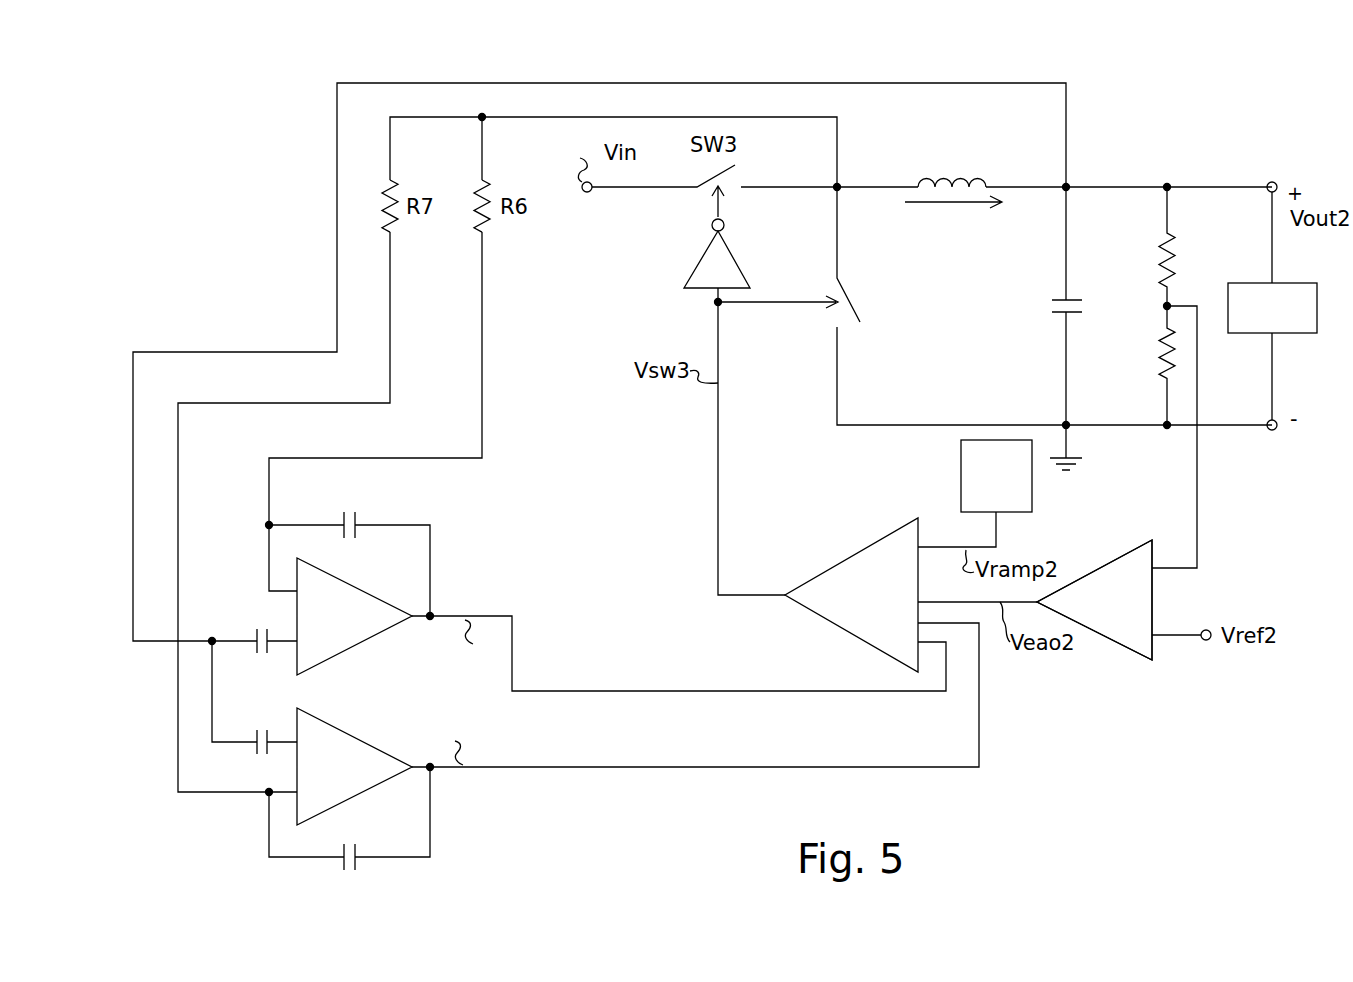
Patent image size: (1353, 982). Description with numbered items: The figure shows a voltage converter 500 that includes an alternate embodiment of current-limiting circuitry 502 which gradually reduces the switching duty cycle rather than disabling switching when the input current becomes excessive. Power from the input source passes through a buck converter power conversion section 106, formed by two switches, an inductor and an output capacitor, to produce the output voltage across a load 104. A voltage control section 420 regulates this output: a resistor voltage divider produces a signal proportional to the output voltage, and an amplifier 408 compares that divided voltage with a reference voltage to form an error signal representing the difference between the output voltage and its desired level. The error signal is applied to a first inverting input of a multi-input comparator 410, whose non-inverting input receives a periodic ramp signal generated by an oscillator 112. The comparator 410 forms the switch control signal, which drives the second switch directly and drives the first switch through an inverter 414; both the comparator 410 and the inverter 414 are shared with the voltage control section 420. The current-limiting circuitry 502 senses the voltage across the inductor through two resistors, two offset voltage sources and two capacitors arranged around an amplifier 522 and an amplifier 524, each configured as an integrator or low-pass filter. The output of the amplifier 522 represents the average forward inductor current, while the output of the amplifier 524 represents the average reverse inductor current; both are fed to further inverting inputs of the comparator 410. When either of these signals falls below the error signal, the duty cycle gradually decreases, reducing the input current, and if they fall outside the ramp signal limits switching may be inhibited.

The voltage converter 500 is at (725, 70).
The inverter 414 is at (695, 258).
The power conversion section 106 is at (991, 361).
The load 104 is at (1297, 334).
The oscillator 112 is at (981, 469).
The multi-input comparator 410 is at (884, 531).
The voltage control section 420 is at (1136, 519).
The amplifier 408 is at (1152, 655).
The current-limiting circuitry 502 is at (495, 598).
The amplifier 522 is at (344, 577).
The amplifier 524 is at (344, 727).